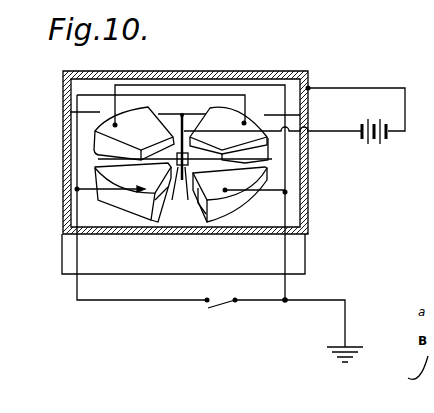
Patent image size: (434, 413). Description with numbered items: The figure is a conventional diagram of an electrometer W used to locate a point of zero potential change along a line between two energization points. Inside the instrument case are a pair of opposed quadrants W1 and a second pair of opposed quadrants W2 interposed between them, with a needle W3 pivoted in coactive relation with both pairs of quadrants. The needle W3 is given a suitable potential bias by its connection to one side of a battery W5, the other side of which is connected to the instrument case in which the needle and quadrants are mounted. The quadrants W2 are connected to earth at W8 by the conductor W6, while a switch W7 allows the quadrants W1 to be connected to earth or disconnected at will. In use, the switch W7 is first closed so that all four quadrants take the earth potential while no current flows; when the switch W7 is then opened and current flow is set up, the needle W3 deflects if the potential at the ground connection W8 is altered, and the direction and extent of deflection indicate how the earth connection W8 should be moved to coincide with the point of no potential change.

The electrometer W is at (308, 175).
The pair of opposed quadrants W1 is at (246, 122).
The second pair of opposed quadrants W2 is at (97, 130).
The needle W3 is at (186, 180).
The battery W5 is at (370, 140).
The conductor W6 is at (313, 298).
The switch W7 is at (222, 305).
The earth connection W8 is at (352, 347).